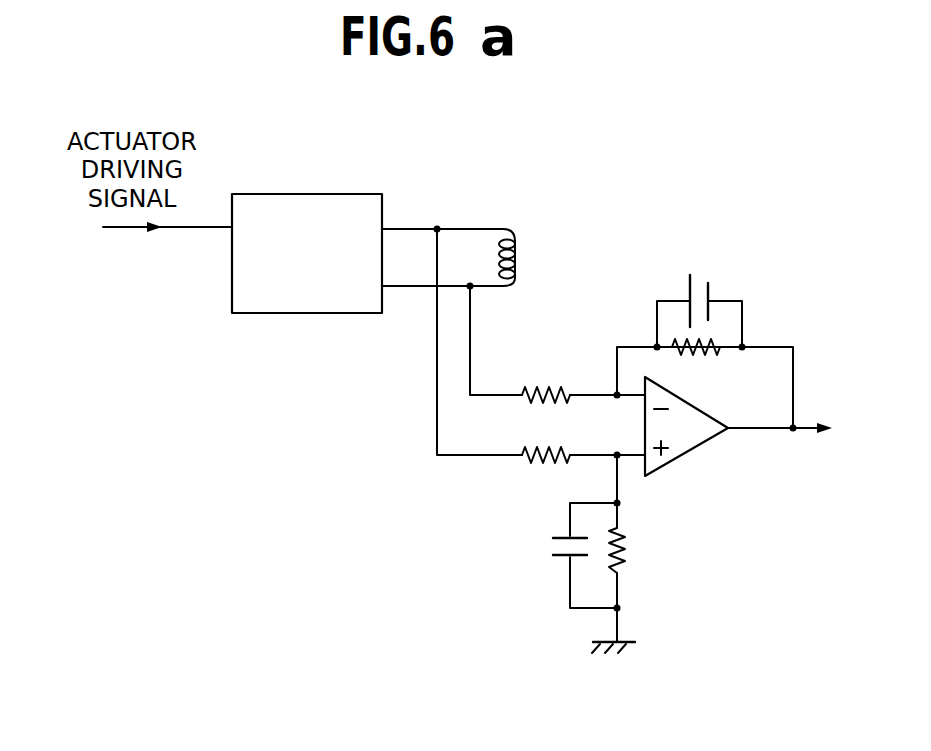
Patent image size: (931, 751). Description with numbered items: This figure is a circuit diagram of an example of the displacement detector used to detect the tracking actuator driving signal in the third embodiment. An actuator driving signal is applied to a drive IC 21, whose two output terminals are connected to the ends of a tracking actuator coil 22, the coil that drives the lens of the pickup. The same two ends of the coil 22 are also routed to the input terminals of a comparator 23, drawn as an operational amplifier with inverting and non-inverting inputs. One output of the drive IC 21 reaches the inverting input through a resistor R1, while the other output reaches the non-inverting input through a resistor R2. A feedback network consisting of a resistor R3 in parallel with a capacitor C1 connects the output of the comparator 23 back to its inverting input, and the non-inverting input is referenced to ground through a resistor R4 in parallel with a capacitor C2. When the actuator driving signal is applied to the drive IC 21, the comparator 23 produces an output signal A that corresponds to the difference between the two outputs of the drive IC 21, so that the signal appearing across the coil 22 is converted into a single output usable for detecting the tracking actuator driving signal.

The drive IC 21 is at (330, 194).
The tracking actuator coil 22 is at (517, 265).
The comparator 23 is at (698, 448).
The resistor R1 is at (583, 379).
The resistor R2 is at (583, 472).
The feedback resistor R3 is at (696, 363).
The resistor R4 is at (636, 550).
The feedback capacitor C1 is at (699, 294).
The capacitor C2 is at (549, 549).
The output signal A is at (815, 433).